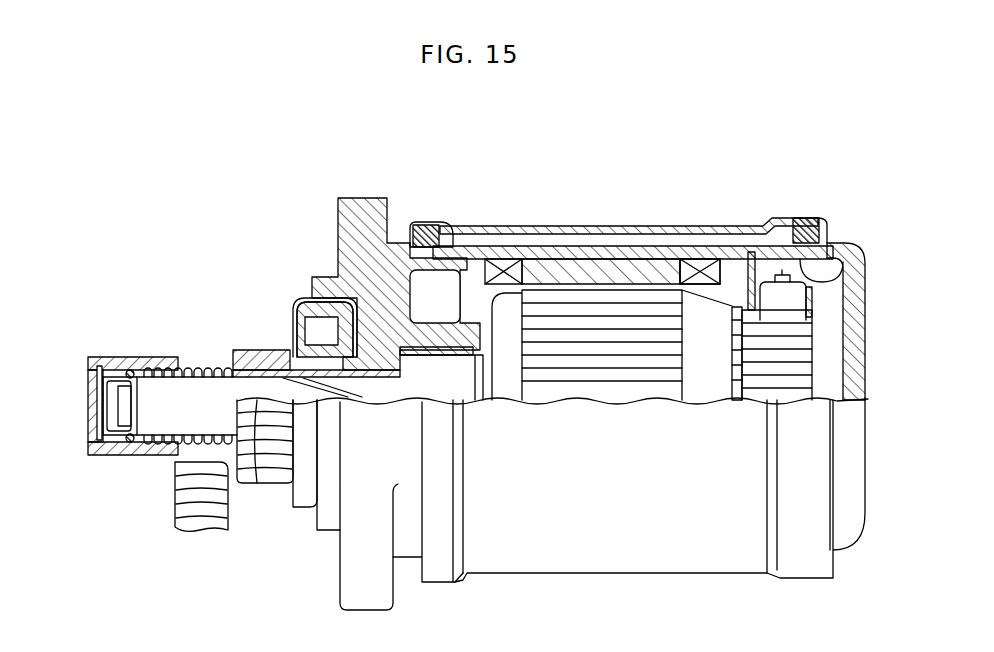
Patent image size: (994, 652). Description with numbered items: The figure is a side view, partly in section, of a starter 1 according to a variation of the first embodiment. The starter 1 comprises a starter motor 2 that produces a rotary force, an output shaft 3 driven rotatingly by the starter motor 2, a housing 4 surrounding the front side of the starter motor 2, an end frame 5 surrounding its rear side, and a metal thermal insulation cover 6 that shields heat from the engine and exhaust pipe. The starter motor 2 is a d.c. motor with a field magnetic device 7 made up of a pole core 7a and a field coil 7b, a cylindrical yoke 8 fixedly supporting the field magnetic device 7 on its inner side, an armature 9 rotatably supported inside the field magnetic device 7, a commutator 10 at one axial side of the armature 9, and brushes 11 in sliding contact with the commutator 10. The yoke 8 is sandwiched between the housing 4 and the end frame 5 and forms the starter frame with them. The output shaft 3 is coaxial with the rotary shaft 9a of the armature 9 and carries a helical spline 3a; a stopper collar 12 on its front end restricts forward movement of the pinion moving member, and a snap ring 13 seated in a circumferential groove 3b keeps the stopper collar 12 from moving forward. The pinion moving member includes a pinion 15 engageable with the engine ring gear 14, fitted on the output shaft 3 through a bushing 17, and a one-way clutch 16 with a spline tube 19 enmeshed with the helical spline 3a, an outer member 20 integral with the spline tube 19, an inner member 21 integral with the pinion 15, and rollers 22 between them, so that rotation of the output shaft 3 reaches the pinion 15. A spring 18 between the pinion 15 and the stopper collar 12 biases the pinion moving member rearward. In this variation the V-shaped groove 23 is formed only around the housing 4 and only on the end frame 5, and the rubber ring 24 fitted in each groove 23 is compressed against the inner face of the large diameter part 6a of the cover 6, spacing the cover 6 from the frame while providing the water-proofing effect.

The starter 1 is at (330, 160).
The starter motor 2 is at (653, 236).
The output shaft 3 is at (192, 383).
The helical spline 3a is at (346, 390).
The circumferential groove 3b is at (130, 415).
The housing 4 is at (378, 268).
The end frame 5 is at (833, 245).
The thermal insulation cover 6 is at (632, 227).
The large diameter part 6a is at (441, 232).
The field magnetic device 7 is at (602, 271).
The pole core 7a is at (570, 270).
The field coil 7b is at (700, 270).
The yoke 8 is at (720, 252).
The armature 9 is at (579, 388).
The rotary shaft 9a is at (460, 394).
The commutator 10 is at (800, 355).
The brushes 11 is at (795, 302).
The stopper collar 12 is at (128, 452).
The snap ring 13 is at (129, 370).
The ring gear 14 is at (183, 507).
The pinion 15 is at (277, 482).
The one-way clutch 16 is at (291, 299).
The bushing 17 is at (249, 482).
The spring 18 is at (208, 368).
The spline tube 19 is at (373, 365).
The outer member 20 is at (322, 310).
The inner member 21 is at (300, 350).
The rollers 22 is at (318, 325).
The V-shaped groove 23 is at (465, 257).
The ring 24 is at (448, 244).